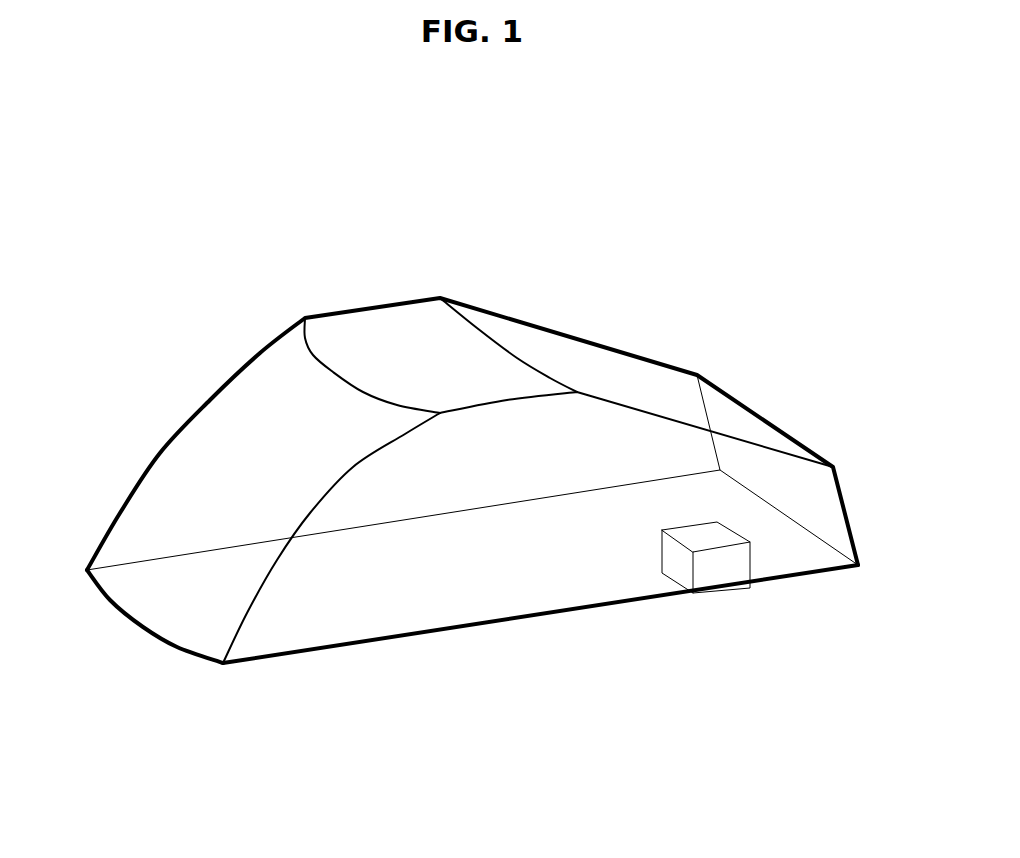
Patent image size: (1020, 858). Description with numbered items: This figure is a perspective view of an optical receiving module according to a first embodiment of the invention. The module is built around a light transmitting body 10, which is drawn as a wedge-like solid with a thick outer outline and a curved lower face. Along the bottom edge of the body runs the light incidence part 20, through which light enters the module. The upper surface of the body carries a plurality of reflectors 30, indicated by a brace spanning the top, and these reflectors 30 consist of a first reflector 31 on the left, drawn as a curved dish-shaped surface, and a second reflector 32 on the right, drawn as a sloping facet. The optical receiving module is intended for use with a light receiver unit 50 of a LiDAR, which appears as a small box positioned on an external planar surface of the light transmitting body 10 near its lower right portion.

The light transmitting body 10 is at (524, 570).
The light incidence part 20 is at (357, 645).
The reflectors 30 is at (330, 178).
The first reflector 31 is at (280, 400).
The second reflector 32 is at (837, 500).
The light receiver unit 50 is at (718, 593).